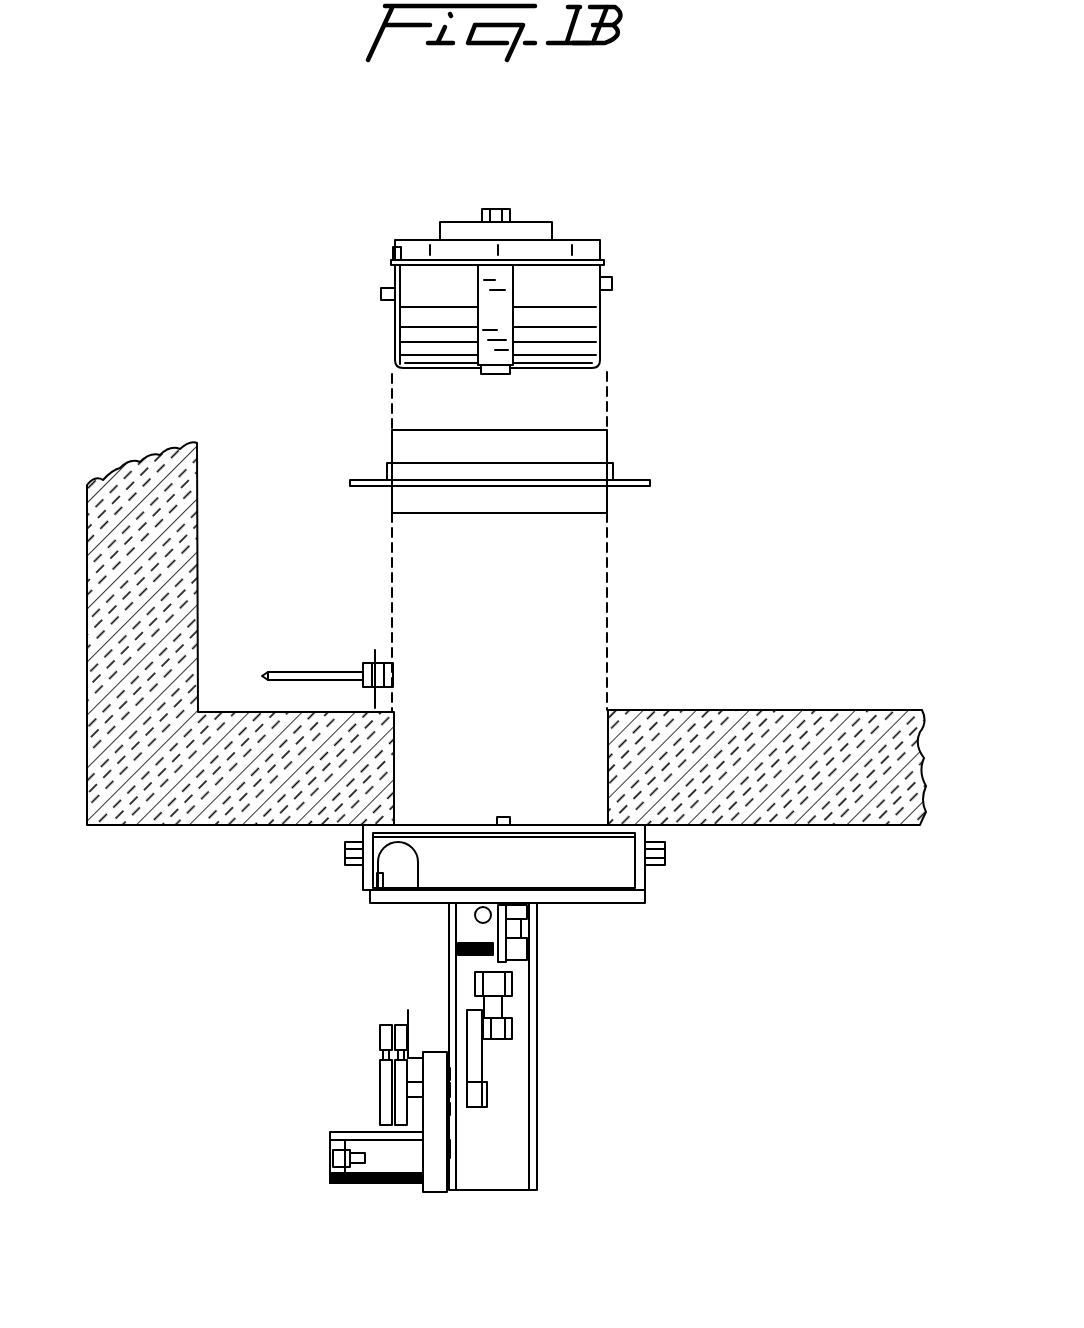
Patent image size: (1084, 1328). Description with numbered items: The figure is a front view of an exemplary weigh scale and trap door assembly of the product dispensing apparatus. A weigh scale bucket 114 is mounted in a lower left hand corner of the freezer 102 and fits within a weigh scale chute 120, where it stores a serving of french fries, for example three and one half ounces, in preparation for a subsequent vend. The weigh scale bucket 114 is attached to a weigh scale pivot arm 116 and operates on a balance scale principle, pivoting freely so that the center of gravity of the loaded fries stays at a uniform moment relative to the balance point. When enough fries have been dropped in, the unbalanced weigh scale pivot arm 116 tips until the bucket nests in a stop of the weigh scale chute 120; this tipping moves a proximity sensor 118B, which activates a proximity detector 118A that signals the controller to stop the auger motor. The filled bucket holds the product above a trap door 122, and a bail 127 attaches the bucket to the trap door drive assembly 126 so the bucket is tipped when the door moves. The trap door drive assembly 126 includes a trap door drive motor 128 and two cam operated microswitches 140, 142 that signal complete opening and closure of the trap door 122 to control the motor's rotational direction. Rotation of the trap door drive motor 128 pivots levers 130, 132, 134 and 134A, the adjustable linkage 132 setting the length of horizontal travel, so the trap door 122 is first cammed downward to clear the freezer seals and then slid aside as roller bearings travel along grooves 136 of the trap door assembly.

The freezer 102 is at (828, 718).
The weigh scale bucket 114 is at (595, 338).
The weigh scale pivot arm 116 is at (557, 243).
The proximity detector 118A is at (398, 668).
The proximity sensor 118B is at (394, 248).
The weigh scale chute 120 is at (613, 467).
The trap door 122 is at (437, 848).
The trap door drive assembly 126 is at (538, 1148).
The bail 127 is at (500, 298).
The trap door drive motor 128 is at (330, 1157).
The lever 130 is at (482, 1062).
The adjustable linkage 132 is at (505, 1003).
The lever 134 is at (500, 962).
The lever 134A is at (528, 931).
The grooves 136 is at (345, 853).
The cam operated microswitch 140 is at (380, 1027).
The cam operated microswitch 142 is at (397, 1027).